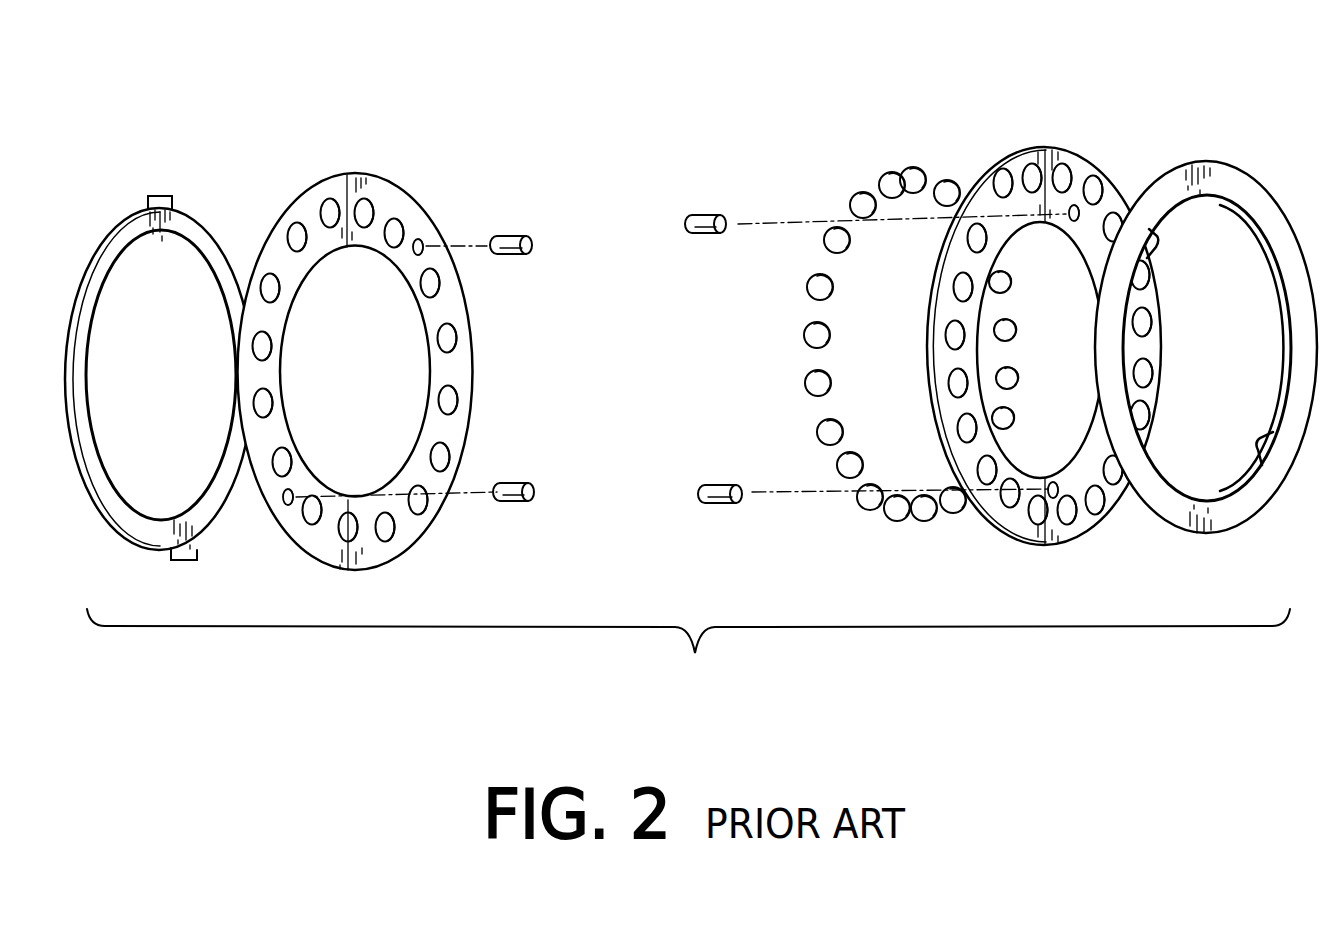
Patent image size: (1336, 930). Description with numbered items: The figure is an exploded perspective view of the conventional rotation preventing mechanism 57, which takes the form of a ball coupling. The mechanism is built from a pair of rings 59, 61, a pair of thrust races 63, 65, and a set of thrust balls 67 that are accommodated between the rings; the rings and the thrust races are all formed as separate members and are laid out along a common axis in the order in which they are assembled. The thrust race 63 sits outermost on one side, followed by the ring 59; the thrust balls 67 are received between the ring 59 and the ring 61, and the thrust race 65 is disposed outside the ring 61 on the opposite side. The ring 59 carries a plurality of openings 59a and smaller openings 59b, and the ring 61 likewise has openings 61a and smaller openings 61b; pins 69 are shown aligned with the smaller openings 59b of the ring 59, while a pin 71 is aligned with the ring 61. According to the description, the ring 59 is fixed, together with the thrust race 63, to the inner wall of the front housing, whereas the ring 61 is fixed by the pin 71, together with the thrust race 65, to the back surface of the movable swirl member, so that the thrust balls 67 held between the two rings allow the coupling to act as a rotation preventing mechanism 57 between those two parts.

The rotation preventing mechanism 57 is at (688, 652).
The ring 59 is at (359, 320).
The ball receiving hole 59a is at (376, 185).
The pin hole 59b is at (425, 243).
The ring 61 is at (1044, 300).
The ball receiving hole 61a is at (1042, 175).
The pin hole 61b is at (1077, 211).
The thrust race 63 is at (157, 195).
The thrust race 65 is at (1192, 162).
The thrust balls 67 is at (895, 170).
The pins 69 is at (517, 233).
The pin 71 is at (705, 213).